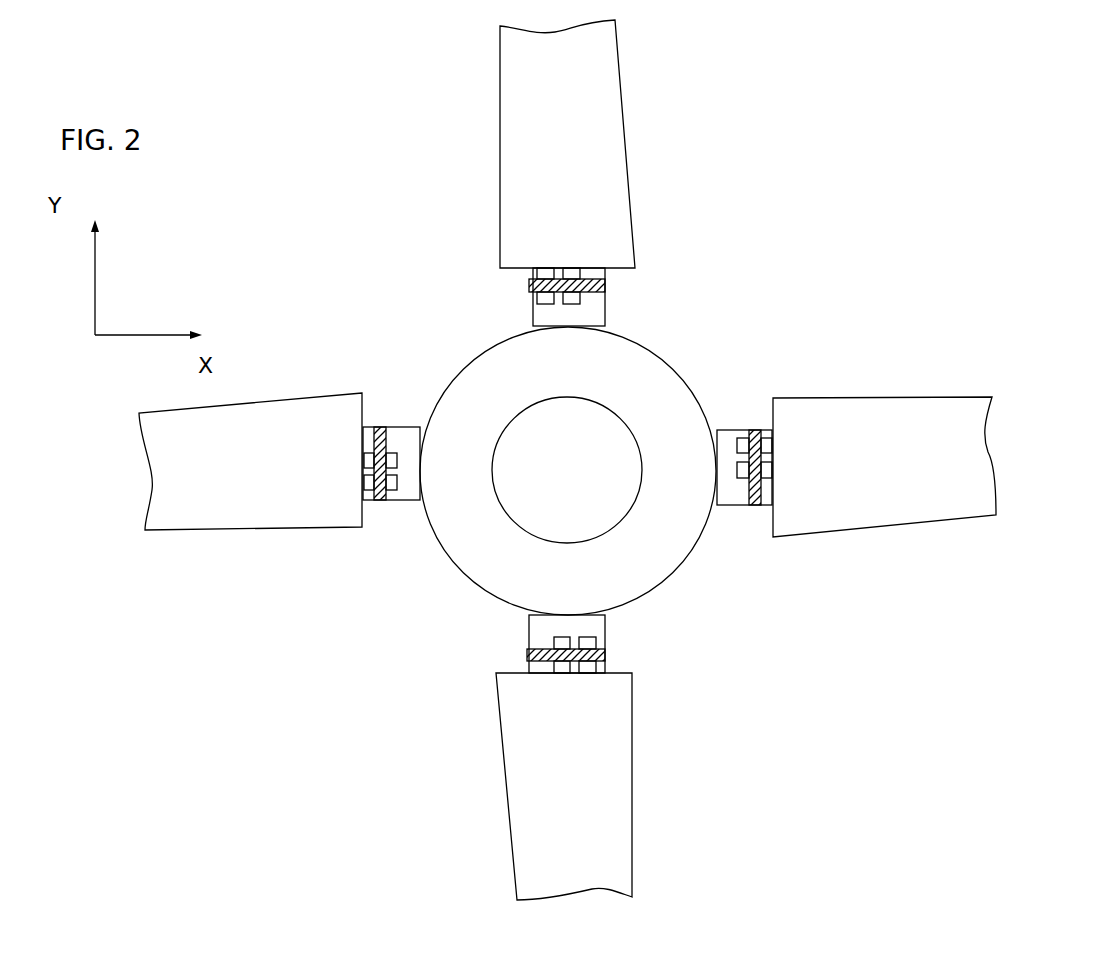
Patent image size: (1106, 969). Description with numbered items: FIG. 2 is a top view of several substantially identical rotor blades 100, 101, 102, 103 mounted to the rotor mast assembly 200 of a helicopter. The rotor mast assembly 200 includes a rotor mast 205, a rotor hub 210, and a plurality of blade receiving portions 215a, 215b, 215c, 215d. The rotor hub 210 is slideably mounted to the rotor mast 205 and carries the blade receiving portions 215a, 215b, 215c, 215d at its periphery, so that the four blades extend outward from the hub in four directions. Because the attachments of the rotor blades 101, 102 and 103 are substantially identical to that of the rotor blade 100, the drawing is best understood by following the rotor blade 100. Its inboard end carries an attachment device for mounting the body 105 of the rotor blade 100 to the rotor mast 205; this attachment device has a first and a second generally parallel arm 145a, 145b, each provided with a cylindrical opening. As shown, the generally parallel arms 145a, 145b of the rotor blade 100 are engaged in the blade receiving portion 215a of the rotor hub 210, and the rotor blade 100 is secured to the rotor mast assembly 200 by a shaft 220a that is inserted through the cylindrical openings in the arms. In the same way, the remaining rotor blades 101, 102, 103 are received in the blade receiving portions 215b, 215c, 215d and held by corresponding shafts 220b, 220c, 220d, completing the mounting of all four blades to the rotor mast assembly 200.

The rotor blade 100 is at (843, 388).
The rotor blade 101 is at (497, 150).
The rotor blade 102 is at (278, 540).
The rotor blade 103 is at (644, 738).
The body 105 is at (898, 472).
The first arm 145a is at (580, 438).
The second arm 145b is at (725, 507).
The rotor mast assembly 200 is at (475, 338).
The rotor mast 205 is at (732, 443).
The rotor hub 210 is at (490, 565).
The blade receiving portion 215a is at (730, 507).
The blade receiving portion 215b is at (530, 302).
The blade receiving portion 215c is at (404, 425).
The blade receiving portion 215d is at (607, 636).
The shaft 220a is at (753, 430).
The shaft 220b is at (606, 287).
The shaft 220c is at (385, 500).
The shaft 220d is at (527, 655).